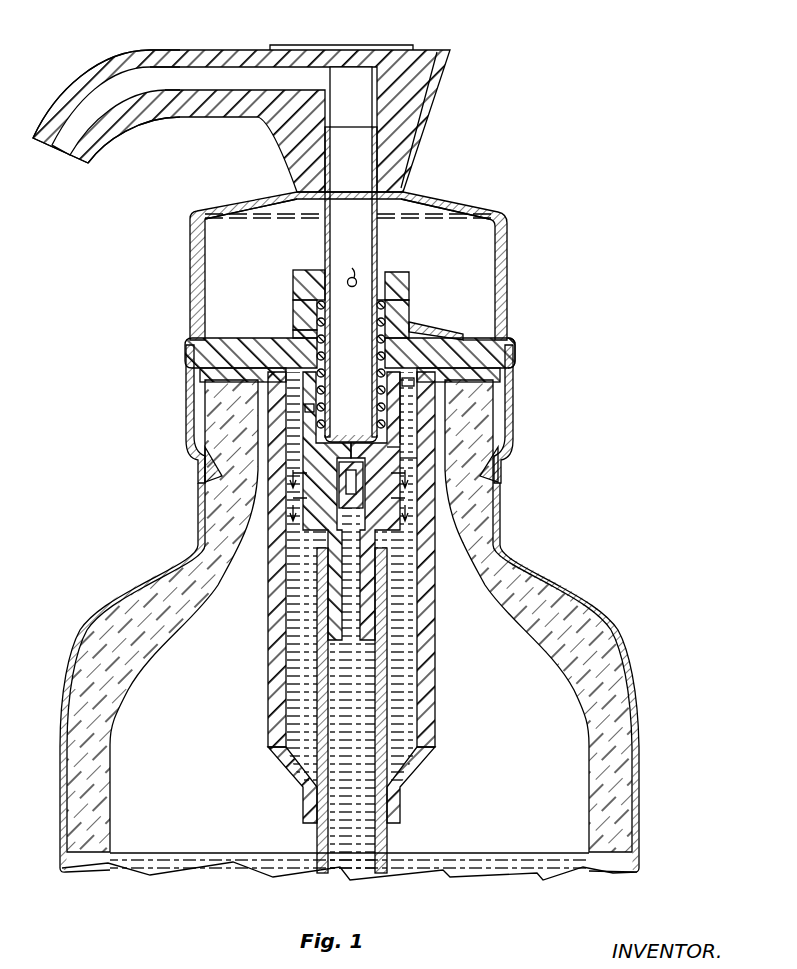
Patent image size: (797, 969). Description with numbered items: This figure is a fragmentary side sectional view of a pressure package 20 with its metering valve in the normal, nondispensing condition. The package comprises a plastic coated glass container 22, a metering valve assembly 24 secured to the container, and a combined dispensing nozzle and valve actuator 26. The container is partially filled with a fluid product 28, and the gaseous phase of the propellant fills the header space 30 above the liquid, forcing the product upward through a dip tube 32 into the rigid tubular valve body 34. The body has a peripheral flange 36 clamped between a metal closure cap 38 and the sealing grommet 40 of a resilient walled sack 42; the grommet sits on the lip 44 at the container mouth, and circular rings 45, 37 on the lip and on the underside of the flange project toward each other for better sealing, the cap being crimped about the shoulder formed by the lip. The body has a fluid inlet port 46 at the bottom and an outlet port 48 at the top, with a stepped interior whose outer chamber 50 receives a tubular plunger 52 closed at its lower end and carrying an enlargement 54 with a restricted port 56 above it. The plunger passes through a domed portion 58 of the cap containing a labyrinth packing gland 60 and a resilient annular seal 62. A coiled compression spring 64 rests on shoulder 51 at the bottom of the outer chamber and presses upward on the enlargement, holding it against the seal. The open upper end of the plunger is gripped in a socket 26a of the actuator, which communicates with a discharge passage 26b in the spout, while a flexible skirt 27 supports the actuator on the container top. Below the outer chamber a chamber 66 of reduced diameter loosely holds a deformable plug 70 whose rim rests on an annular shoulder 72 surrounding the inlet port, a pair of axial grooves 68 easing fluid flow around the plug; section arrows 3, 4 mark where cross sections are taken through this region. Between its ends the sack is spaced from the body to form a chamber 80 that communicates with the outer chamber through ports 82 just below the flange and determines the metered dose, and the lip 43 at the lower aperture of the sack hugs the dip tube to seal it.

The pressure package 20 is at (376, 252).
The plastic coated glass container 22 is at (553, 580).
The metering valve assembly 24 is at (350, 286).
The combined dispensing nozzle and valve actuator 26 is at (267, 100).
The socket 26a is at (358, 82).
The discharge passage 26b is at (130, 72).
The skirt 27 is at (440, 200).
The fluid product 28 is at (520, 858).
The header space 30 is at (518, 724).
The dip tube 32 is at (390, 838).
The tubular valve body 34 is at (407, 421).
The peripheral flange 36 is at (202, 353).
The circular ring 37 is at (477, 340).
The metal closure cap 38 is at (183, 405).
The sealing grommet 40 is at (195, 373).
The resilient walled sack 42 is at (362, 597).
The lip 43 is at (303, 803).
The lip 44 is at (522, 393).
The circular ring 45 is at (517, 355).
The fluid inlet port 46 is at (350, 512).
The outlet port 48 is at (403, 320).
The outer chamber 50 is at (430, 337).
The shoulder 51 is at (307, 408).
The tubular valve stem or plunger 52 is at (325, 230).
The flange or enlargement 54 is at (373, 315).
The restricted port 56 is at (355, 267).
The domed portion 58 is at (293, 278).
The labyrinth packing gland 60 is at (410, 290).
The resilient annular seal 62 is at (302, 307).
The coiled compression spring 64 is at (293, 330).
The chamber of reduced diameter 66 is at (400, 447).
The grooves 68 is at (410, 460).
The plug 70 is at (300, 440).
The annular shelf or shoulder 72 is at (285, 540).
The chamber 80 is at (410, 684).
The ports 82 is at (413, 384).
The section line 3 is at (348, 469).
The section line 4 is at (348, 504).